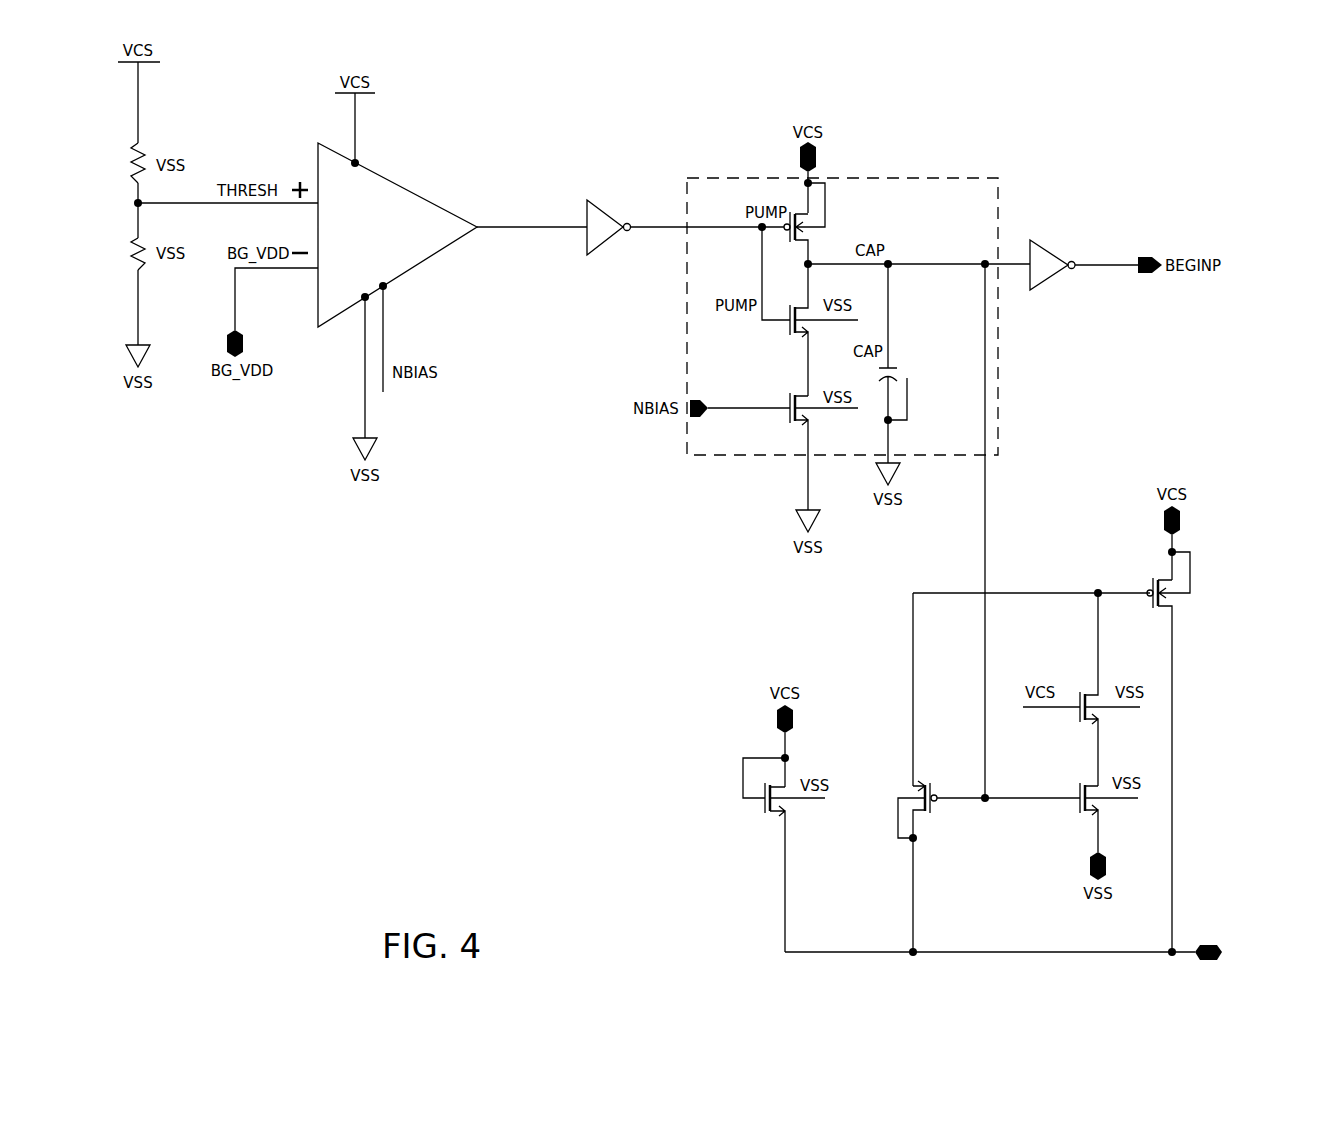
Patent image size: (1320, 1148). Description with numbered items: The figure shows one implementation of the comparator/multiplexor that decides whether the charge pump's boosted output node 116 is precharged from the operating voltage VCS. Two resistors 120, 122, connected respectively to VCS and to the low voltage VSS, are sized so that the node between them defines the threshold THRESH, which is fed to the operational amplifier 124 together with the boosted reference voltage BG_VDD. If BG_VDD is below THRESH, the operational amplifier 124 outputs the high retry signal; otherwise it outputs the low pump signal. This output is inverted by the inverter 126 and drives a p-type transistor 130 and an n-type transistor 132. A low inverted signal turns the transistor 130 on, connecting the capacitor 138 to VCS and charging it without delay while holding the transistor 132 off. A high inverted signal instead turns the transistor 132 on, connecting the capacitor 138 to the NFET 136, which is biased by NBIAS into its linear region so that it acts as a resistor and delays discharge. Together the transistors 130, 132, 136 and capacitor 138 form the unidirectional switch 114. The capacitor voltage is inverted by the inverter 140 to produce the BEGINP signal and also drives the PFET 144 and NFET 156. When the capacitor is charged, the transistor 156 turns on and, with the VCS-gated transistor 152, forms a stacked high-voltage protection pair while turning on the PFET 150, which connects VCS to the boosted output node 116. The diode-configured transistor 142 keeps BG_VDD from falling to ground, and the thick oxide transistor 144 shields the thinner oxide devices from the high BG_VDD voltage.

The unidirectional switch 114 is at (998, 197).
The boosted output node 116 is at (1233, 940).
The resistor 120 is at (150, 153).
The resistor 122 is at (150, 258).
The operational amplifier 124 is at (392, 182).
The inverter 126 is at (580, 238).
The p-type field effect transistor 130 is at (838, 206).
The n-type field effect transistor 132 is at (785, 330).
The NFET 136 is at (790, 385).
The capacitor 138 is at (893, 378).
The inverter 140 is at (1050, 252).
The transistor 142 is at (800, 812).
The PFET transistor 144 is at (943, 812).
The PFET 150 is at (1183, 620).
The transistor 152 is at (1127, 718).
The NFET 156 is at (1127, 808).